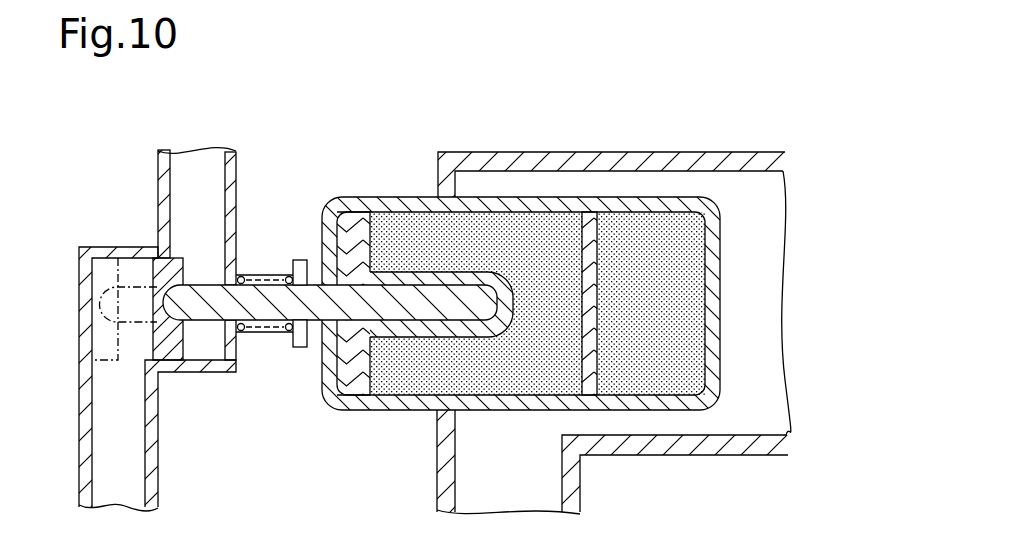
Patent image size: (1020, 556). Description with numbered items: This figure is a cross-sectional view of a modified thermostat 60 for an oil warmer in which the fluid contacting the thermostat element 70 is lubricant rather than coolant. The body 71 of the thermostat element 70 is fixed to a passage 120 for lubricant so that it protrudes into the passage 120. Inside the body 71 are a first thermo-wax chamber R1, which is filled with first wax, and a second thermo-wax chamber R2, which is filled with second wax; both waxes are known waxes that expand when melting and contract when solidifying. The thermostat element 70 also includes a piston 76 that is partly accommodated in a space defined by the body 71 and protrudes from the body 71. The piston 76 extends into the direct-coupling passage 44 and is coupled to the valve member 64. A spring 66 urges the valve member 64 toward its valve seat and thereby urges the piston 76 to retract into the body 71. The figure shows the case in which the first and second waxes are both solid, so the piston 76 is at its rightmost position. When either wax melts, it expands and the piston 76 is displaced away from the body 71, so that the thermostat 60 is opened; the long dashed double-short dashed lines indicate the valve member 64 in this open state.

The thermostat 60 is at (319, 482).
The direct-coupling passage 44 is at (225, 166).
The valve member 64 is at (153, 272).
The spring 66 is at (239, 276).
The thermostat element 70 is at (549, 297).
The body 71 is at (722, 236).
The piston 76 is at (215, 290).
The passage 120 is at (640, 174).
The first thermo-wax chamber R1 is at (521, 388).
The second thermo-wax chamber R2 is at (697, 277).